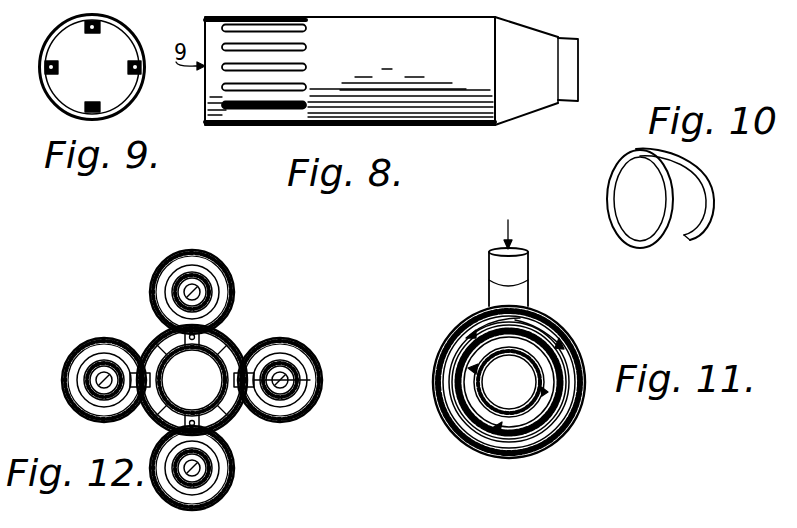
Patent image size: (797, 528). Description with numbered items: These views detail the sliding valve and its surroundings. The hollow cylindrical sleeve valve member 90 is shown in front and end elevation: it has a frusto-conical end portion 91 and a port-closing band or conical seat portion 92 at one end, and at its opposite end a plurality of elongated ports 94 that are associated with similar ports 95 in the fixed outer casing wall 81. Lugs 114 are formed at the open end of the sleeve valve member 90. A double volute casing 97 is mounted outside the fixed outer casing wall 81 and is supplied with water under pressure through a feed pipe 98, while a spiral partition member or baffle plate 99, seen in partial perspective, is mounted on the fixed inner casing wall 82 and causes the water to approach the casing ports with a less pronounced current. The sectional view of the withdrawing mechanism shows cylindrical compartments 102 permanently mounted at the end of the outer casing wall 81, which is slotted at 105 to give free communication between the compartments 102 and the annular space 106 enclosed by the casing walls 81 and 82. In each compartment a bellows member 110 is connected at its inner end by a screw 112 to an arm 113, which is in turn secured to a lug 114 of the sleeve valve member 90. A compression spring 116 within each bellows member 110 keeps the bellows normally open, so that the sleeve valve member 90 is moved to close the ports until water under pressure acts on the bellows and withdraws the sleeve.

In FIG. 11, the fixed outer casing wall 81 is at (565, 377).
In FIG. 12, the fixed outer casing wall 81 is at (214, 366).
In FIG. 11, the fixed inner casing wall 82 is at (548, 430).
In FIG. 12, the fixed inner casing wall 82 is at (221, 413).
In FIG. 9, the sleeve valve member 90 is at (118, 19).
In FIG. 8, the sleeve valve member 90 is at (350, 71).
In FIG. 11, the sleeve valve member 90 is at (526, 422).
In FIG. 12, the sleeve valve member 90 is at (192, 380).
In FIG. 8, the frusto-conical end portion 91 is at (516, 25).
In FIG. 8, the port-closing band 92 is at (561, 39).
In FIG. 8, the elongated ports 94 is at (307, 49).
In FIG. 11, the elongated ports 94 is at (553, 371).
In FIG. 11, the ports 95 is at (515, 368).
In FIG. 11, the double volute casing 97 is at (553, 331).
In FIG. 11, the feed pipe 98 is at (529, 258).
In FIG. 10, the spiral partition member 99 is at (628, 148).
In FIG. 12, the cylindrical compartments 102 is at (222, 270).
In FIG. 12, the slots 105 is at (232, 292).
In FIG. 12, the annular space 106 is at (160, 411).
In FIG. 12, the bellows member 110 is at (295, 373).
In FIG. 12, the screw 112 is at (292, 384).
In FIG. 12, the arm 113 is at (178, 328).
In FIG. 9, the lug 114 is at (86, 27).
In FIG. 12, the compression spring 116 is at (300, 408).